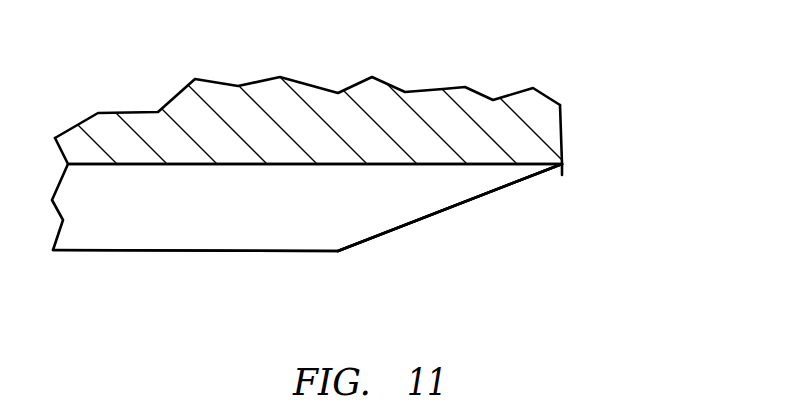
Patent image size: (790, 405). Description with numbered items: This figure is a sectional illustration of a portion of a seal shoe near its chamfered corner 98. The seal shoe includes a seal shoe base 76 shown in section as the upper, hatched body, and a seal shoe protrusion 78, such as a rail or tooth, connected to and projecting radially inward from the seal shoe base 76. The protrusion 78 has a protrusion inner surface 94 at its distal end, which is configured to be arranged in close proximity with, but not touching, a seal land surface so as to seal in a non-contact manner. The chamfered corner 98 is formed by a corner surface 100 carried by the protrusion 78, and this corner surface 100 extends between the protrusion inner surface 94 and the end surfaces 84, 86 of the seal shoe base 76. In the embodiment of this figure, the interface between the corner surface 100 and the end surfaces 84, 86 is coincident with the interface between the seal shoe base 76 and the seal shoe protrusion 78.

The seal shoe base 76 is at (496, 84).
The seal shoe protrusion 78 is at (261, 278).
The first end surface 84 is at (358, 114).
The second end surface 86 is at (563, 138).
The protrusion inner surface 94 is at (163, 251).
The chamfered corner 98 is at (501, 232).
The corner surface 100 is at (433, 215).